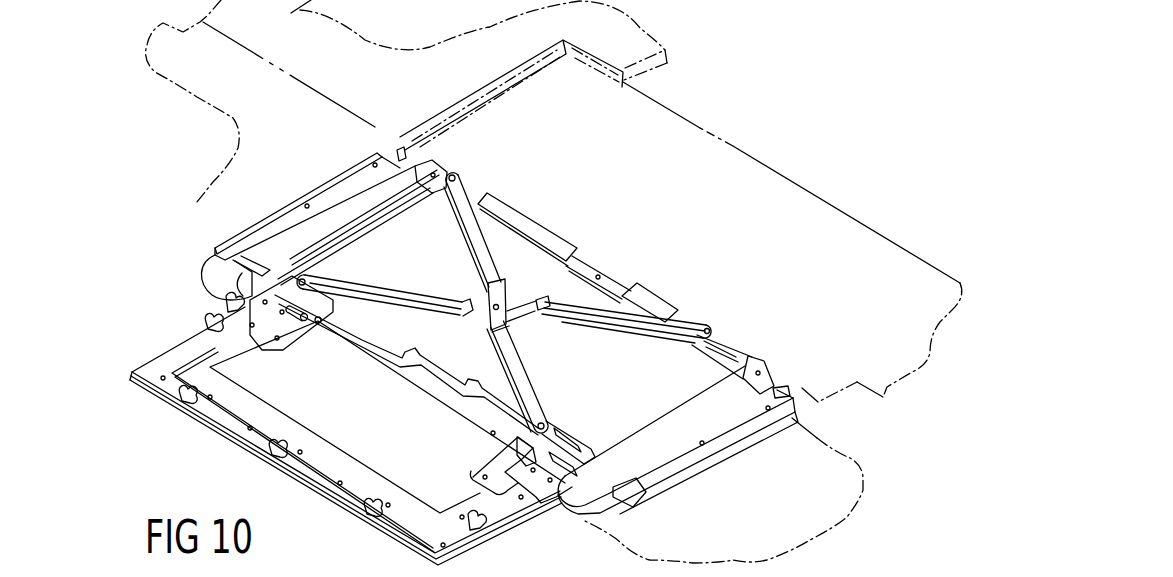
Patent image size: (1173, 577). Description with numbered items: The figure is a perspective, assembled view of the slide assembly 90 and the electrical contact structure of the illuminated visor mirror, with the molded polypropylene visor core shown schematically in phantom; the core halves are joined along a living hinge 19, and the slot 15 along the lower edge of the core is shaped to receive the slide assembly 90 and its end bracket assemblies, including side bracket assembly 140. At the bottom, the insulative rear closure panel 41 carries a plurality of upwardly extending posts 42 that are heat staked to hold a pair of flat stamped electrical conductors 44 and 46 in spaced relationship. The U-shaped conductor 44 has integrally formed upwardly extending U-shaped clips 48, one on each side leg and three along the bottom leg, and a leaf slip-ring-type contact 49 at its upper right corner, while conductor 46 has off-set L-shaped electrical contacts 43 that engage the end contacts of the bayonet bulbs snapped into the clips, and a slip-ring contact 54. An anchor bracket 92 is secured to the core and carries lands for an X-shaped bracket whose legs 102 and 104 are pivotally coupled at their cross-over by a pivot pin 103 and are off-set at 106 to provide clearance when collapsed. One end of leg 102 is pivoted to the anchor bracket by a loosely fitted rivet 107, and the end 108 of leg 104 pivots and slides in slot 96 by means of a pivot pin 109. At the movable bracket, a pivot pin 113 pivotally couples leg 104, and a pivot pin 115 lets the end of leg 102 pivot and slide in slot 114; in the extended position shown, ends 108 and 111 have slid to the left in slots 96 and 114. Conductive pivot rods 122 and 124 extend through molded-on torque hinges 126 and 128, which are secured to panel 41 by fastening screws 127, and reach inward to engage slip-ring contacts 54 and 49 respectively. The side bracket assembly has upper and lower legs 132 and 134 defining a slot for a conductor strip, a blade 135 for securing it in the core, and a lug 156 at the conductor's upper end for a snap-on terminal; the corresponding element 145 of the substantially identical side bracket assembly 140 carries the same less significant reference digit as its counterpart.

The slot 15 is at (633, 110).
The living hinge 19 is at (306, 80).
The rear closure panel 41 is at (360, 406).
The posts 42 is at (478, 25).
The L-shaped electrical contacts 43 is at (228, 300).
The electrical conductor 44 is at (320, 471).
The electrical conductor 46 is at (348, 458).
The U-shaped clips 48 is at (211, 316).
The leaf slip-ring-type contact 49 is at (503, 461).
The slip-ring contact 54 is at (321, 323).
The slide assembly 90 is at (506, 247).
The anchor bracket 92 is at (654, 290).
The slot 96 is at (690, 400).
The leg 102 is at (478, 256).
The pivot pin 103 is at (502, 296).
The leg 104 is at (622, 325).
The off-set 106 is at (511, 319).
The rivet 107 is at (456, 174).
The end of leg 108 is at (657, 332).
The pivot pin 109 is at (694, 340).
The end of leg 111 is at (536, 396).
The pivot pin 113 is at (311, 281).
The slot 114 is at (566, 434).
The pivot pin 115 is at (548, 422).
The conductive pivot rod 122 is at (312, 322).
The conductive pivot rod 124 is at (498, 440).
The torque hinge 126 is at (282, 296).
The fastening screws 127 is at (281, 314).
The torque hinge 128 is at (568, 464).
The upper leg 132 is at (402, 197).
The lower leg 134 is at (373, 219).
The blade 135 is at (333, 178).
The side bracket assembly 140 is at (748, 426).
The flange 145 is at (694, 474).
The lug 156 is at (398, 149).